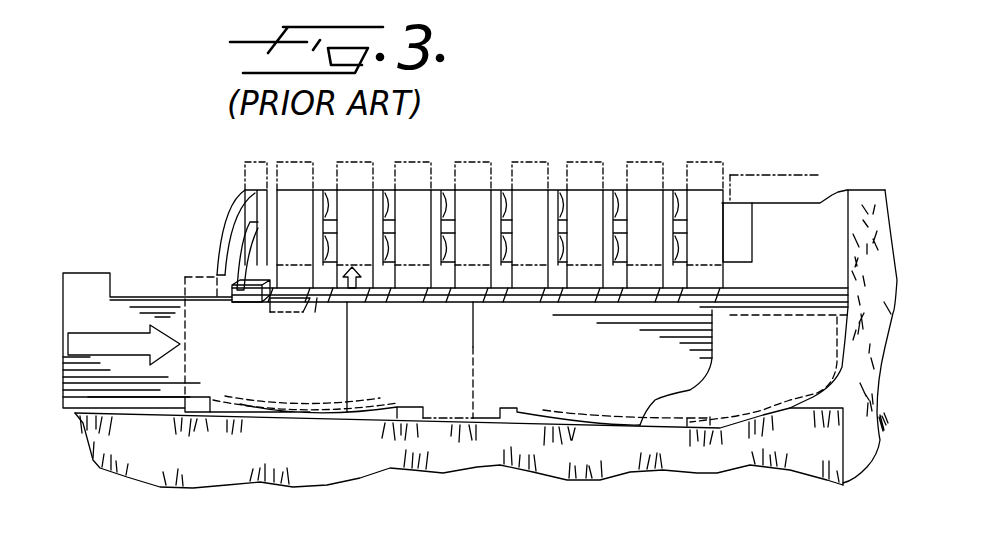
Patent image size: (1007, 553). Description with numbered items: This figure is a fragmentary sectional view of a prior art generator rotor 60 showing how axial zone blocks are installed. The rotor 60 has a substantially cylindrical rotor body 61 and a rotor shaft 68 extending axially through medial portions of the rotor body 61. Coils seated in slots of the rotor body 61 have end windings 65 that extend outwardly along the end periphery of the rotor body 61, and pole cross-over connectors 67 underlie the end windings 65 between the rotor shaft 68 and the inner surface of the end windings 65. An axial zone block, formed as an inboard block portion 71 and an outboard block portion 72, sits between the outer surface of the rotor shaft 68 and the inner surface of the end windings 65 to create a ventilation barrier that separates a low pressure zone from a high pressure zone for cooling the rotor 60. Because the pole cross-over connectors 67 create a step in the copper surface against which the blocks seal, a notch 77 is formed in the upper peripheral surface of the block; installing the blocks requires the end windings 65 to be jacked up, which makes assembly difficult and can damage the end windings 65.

The rotor 60 is at (805, 122).
The rotor body 61 is at (865, 190).
The end windings 65 is at (518, 158).
The pole cross-over connectors 67 is at (297, 298).
The rotor shaft 68 is at (180, 467).
The inboard block portion 71 is at (737, 390).
The outboard block portion 72 is at (233, 317).
The notch 77 is at (268, 322).